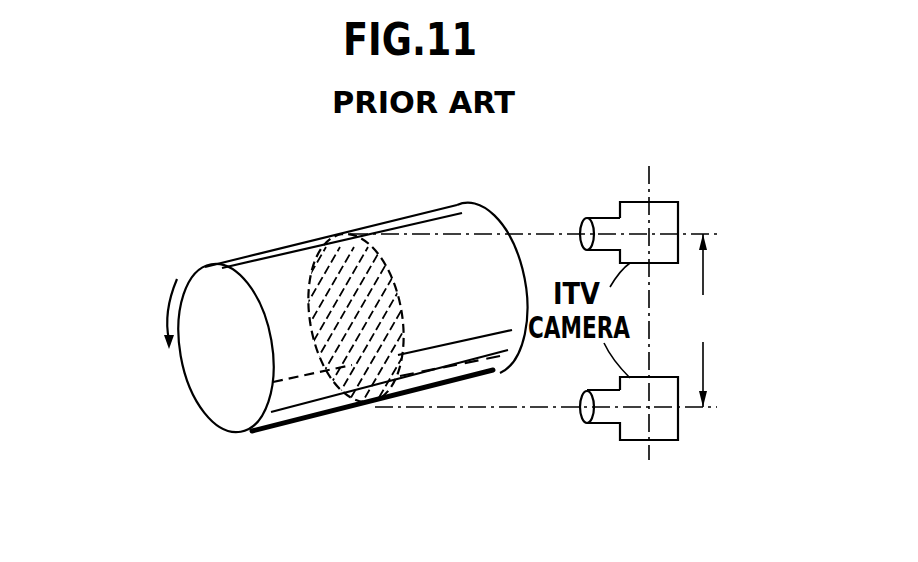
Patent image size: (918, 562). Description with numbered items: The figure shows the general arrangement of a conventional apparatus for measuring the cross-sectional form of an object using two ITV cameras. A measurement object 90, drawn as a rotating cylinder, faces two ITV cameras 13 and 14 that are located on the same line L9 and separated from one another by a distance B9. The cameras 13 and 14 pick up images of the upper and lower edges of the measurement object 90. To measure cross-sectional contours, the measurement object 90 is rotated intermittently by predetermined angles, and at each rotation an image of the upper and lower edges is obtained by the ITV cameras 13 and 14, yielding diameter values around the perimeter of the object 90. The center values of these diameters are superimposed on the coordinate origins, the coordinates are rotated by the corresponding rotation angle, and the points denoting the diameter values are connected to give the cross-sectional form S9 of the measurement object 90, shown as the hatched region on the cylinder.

The measurement object 90 is at (268, 431).
The cross-sectional form S9 is at (357, 404).
The line L9 is at (649, 296).
The ITV camera 13 is at (680, 208).
The ITV camera 14 is at (676, 441).
The distance B9 is at (703, 320).